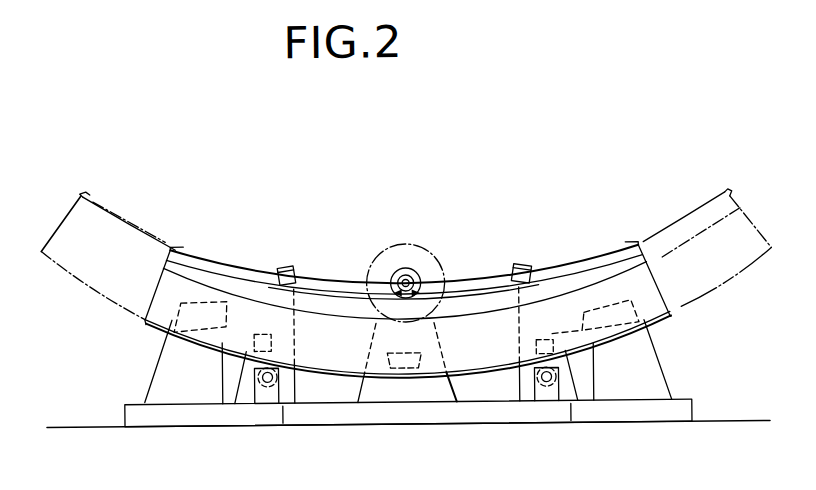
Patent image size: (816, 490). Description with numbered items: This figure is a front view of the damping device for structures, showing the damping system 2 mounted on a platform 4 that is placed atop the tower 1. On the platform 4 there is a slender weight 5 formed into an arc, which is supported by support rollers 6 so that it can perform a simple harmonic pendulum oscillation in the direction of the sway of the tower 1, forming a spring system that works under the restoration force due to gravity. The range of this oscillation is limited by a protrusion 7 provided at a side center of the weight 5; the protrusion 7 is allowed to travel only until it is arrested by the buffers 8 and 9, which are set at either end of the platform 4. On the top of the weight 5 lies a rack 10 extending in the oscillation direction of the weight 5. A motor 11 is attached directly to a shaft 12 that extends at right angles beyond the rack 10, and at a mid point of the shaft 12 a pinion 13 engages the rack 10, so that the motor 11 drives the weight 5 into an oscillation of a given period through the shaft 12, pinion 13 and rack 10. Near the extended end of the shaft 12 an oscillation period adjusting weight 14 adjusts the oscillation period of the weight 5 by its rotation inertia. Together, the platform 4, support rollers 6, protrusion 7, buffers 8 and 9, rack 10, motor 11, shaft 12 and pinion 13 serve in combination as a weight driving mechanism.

The tower 1 is at (72, 423).
The damping system 2 is at (576, 174).
The platform 4 is at (635, 410).
The weight 5 is at (244, 326).
The support rollers 6 is at (536, 373).
The protrusion 7 is at (397, 368).
The buffer 8 is at (217, 265).
The buffer 9 is at (543, 341).
The rack 10 is at (332, 284).
The motor 11 is at (443, 271).
The shaft 12 is at (418, 253).
The pinion 13 is at (403, 267).
The oscillation period adjusting weight 14 is at (445, 275).